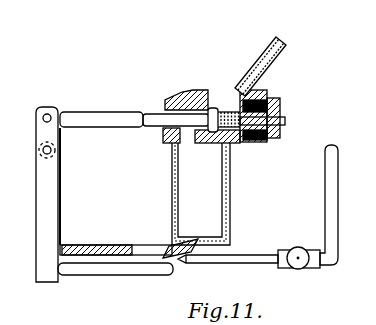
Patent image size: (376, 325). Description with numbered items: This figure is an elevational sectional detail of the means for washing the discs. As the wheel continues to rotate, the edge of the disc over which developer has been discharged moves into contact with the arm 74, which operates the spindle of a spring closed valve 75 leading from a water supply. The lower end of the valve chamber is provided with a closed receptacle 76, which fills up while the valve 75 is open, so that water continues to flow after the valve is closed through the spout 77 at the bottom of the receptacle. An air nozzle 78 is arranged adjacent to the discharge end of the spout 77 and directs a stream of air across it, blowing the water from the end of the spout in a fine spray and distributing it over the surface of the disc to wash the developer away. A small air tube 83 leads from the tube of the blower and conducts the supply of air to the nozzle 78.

The arm 74 is at (43, 228).
The spring closed valve 75 is at (205, 91).
The closed receptacle 76 is at (230, 208).
The spout 77 is at (168, 243).
The air nozzle 78 is at (187, 264).
The air tube 83 is at (326, 203).